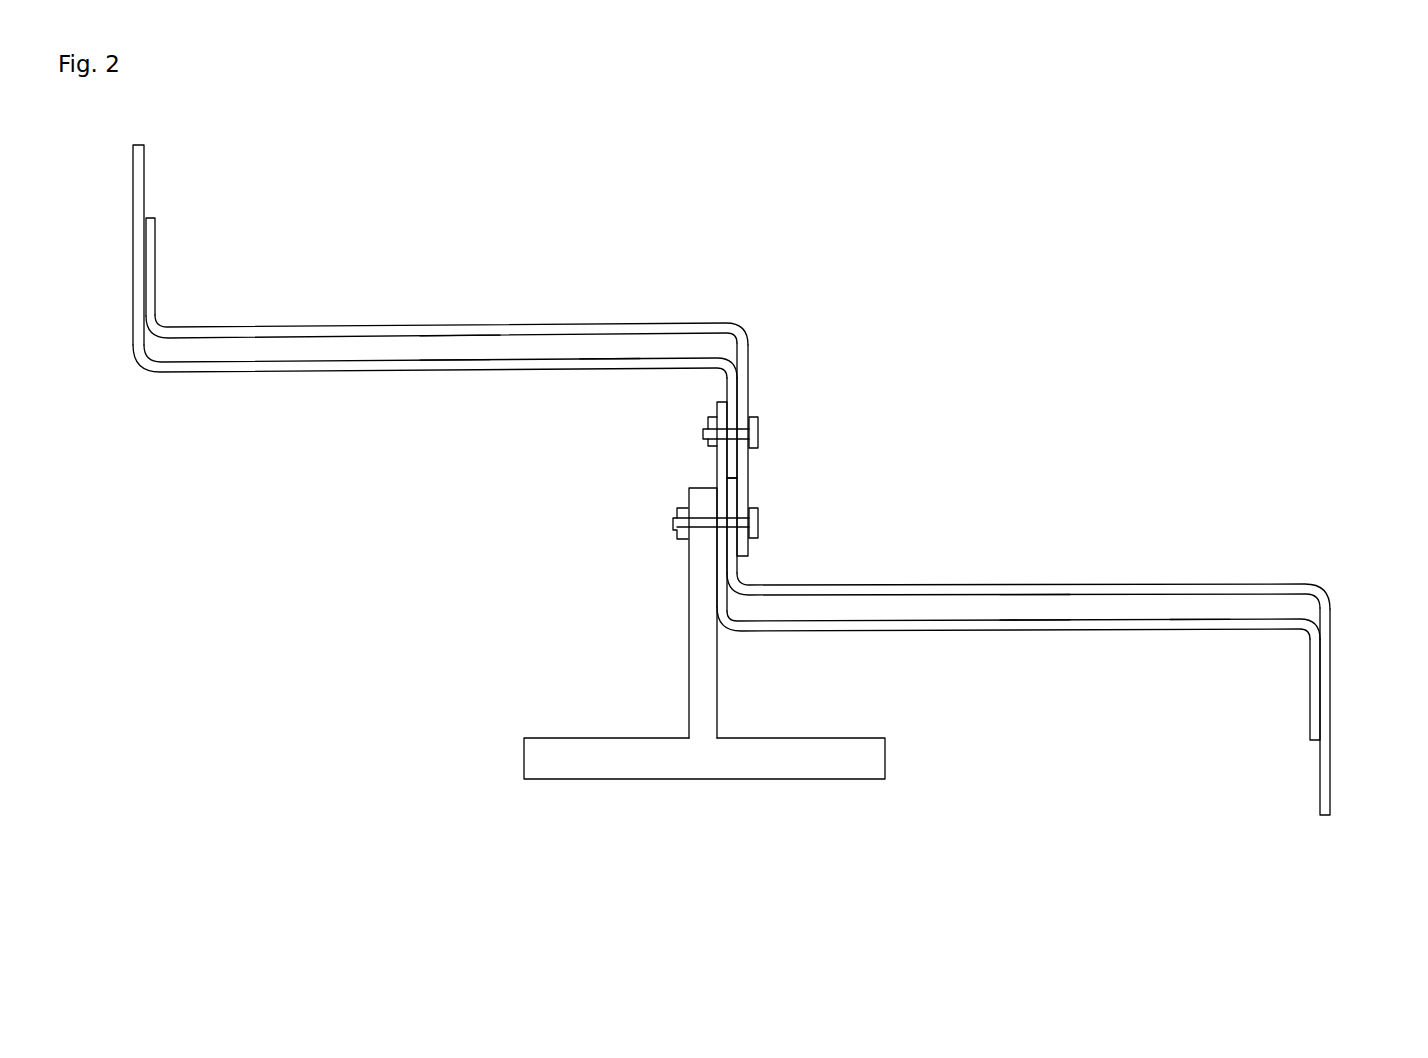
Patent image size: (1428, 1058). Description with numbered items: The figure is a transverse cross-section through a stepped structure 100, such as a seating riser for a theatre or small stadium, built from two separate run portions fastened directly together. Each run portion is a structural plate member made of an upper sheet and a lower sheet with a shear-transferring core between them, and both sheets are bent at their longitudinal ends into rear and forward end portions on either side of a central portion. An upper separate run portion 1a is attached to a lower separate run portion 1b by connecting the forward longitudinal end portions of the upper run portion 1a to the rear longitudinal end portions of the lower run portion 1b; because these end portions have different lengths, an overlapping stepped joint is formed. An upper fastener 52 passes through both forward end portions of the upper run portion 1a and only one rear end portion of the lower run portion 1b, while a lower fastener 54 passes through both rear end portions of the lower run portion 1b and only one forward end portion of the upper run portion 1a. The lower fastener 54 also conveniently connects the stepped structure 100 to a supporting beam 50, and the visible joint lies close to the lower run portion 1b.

The stepped structure 100 is at (932, 228).
The upper separate run portion 1a is at (637, 210).
The lower separate run portion 1b is at (1222, 470).
The supporting beam 50 is at (705, 627).
The upper fastener 52 is at (752, 433).
The lower fastener 54 is at (682, 527).